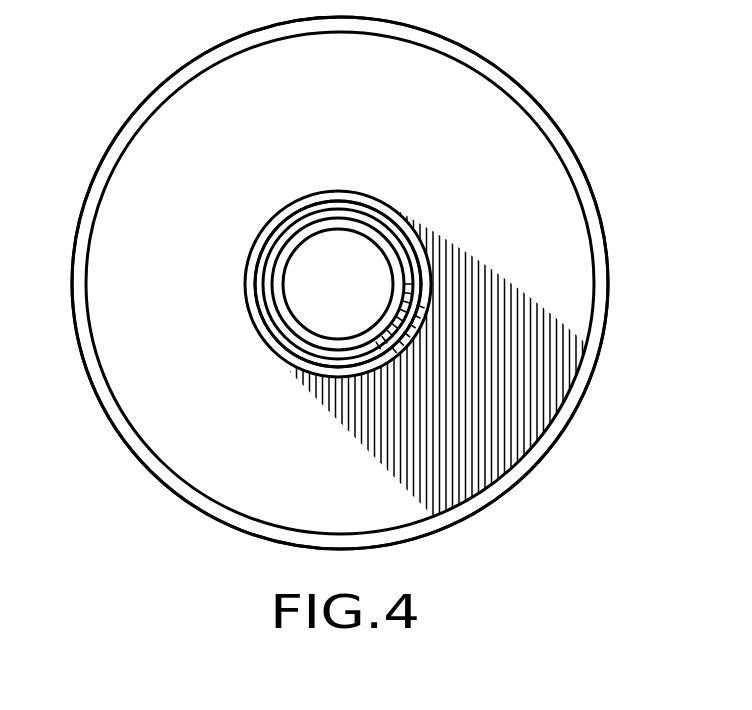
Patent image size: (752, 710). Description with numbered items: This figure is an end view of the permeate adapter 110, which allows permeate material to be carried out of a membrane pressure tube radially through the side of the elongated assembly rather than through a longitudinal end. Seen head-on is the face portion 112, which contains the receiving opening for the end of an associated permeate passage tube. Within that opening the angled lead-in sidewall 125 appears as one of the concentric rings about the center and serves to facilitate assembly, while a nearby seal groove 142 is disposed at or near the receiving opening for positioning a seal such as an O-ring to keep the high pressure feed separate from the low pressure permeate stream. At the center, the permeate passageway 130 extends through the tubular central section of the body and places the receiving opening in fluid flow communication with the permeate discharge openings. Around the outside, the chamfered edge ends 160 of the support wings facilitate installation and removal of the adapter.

The permeate adapter 110 is at (582, 102).
The face portion 112 is at (168, 397).
The angled lead-in sidewall 125 is at (272, 213).
The permeate passageway 130 is at (287, 292).
The seal groove 142 is at (340, 202).
The chamfered edge ends 160 is at (130, 117).